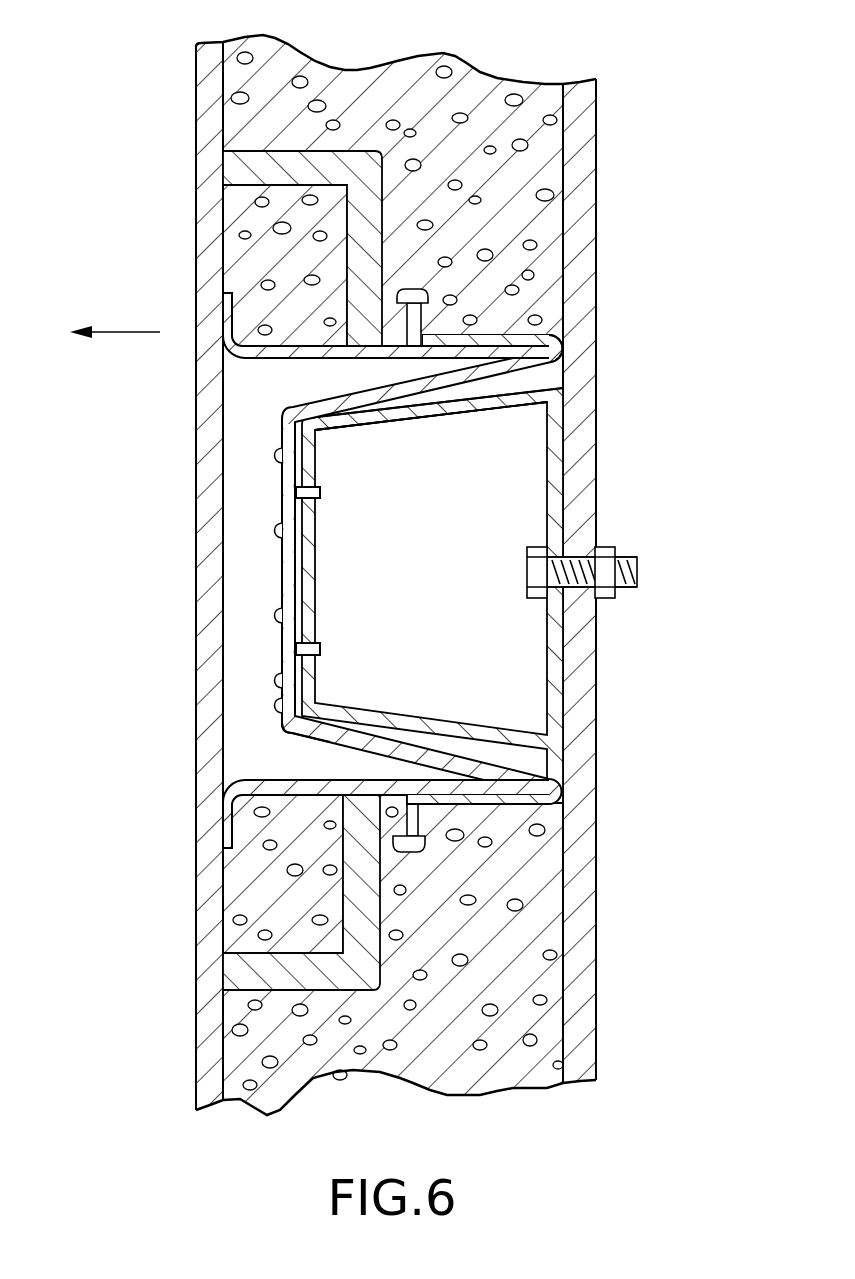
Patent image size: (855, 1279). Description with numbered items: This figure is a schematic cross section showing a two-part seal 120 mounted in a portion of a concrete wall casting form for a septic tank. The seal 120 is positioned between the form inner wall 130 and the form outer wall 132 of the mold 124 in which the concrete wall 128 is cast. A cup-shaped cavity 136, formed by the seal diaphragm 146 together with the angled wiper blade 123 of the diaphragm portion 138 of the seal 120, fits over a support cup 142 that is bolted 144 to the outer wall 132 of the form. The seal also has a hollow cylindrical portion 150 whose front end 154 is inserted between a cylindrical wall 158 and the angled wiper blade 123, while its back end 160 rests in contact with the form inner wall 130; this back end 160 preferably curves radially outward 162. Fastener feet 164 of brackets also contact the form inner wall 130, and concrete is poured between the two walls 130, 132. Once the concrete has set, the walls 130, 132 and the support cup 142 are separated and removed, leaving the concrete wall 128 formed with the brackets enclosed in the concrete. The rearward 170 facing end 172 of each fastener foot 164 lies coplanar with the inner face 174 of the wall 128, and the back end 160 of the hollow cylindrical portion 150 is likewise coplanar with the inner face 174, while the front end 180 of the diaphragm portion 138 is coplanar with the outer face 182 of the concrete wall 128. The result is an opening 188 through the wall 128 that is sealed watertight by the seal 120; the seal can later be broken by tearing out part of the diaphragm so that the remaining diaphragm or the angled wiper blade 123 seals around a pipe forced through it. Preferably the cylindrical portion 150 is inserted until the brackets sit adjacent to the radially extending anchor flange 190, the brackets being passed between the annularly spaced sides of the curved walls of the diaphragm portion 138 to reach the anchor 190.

The two-part seal 120 is at (362, 160).
The angled wiper blade 123 is at (495, 405).
The mold 124 is at (210, 58).
The concrete wall 128 is at (283, 63).
The form inner wall 130 is at (197, 263).
The form outer wall 132 is at (582, 410).
The cup-shaped cavity 136 is at (353, 410).
The diaphragm portion 138 is at (545, 345).
The support cup 142 is at (432, 410).
The bolt 144 is at (623, 557).
The seal diaphragm 146 is at (280, 565).
The hollow cylindrical portion 150 is at (278, 785).
The front end 154 is at (490, 805).
The cylindrical wall 158 is at (533, 272).
The back end 160 is at (224, 838).
The radially outward curve 162 is at (235, 350).
The fastener feet 164 is at (260, 162).
The rearward direction 170 is at (118, 332).
The rearward facing end 172 is at (240, 190).
The inner face 174 is at (237, 900).
The front end 180 is at (563, 364).
The outer face 182 is at (562, 938).
The opening 188 is at (340, 663).
The anchor flange 190 is at (412, 290).